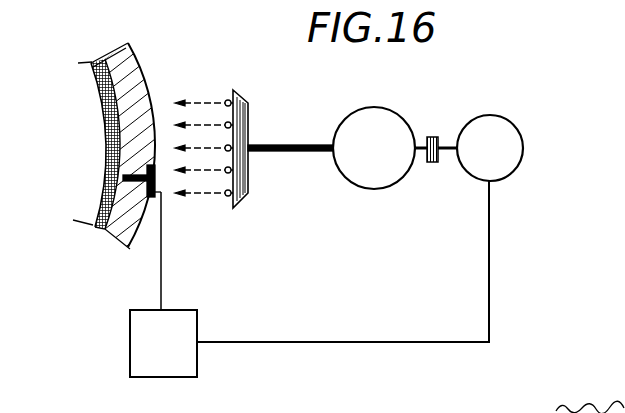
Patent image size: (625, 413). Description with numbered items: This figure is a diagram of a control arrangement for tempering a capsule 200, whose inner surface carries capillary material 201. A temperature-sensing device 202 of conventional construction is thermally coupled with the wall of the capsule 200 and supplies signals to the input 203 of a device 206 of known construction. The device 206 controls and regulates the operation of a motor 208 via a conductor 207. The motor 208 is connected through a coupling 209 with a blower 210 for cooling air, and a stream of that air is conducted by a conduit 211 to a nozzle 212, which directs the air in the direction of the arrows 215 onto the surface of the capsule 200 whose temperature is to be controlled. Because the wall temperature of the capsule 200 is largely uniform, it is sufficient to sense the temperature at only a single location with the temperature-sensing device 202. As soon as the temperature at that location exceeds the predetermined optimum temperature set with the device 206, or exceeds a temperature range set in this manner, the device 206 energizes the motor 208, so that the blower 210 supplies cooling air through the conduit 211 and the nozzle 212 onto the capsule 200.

The capsule 200 is at (118, 237).
The capillary material 201 is at (112, 134).
The temperature-sensing device 202 is at (157, 198).
The input 203 is at (163, 308).
The device 206 is at (158, 370).
The conductor 207 is at (302, 345).
The motor 208 is at (512, 133).
The coupling 209 is at (438, 163).
The blower 210 is at (370, 183).
The conduit 211 is at (295, 145).
The nozzle 212 is at (248, 187).
The arrows 215 is at (202, 140).